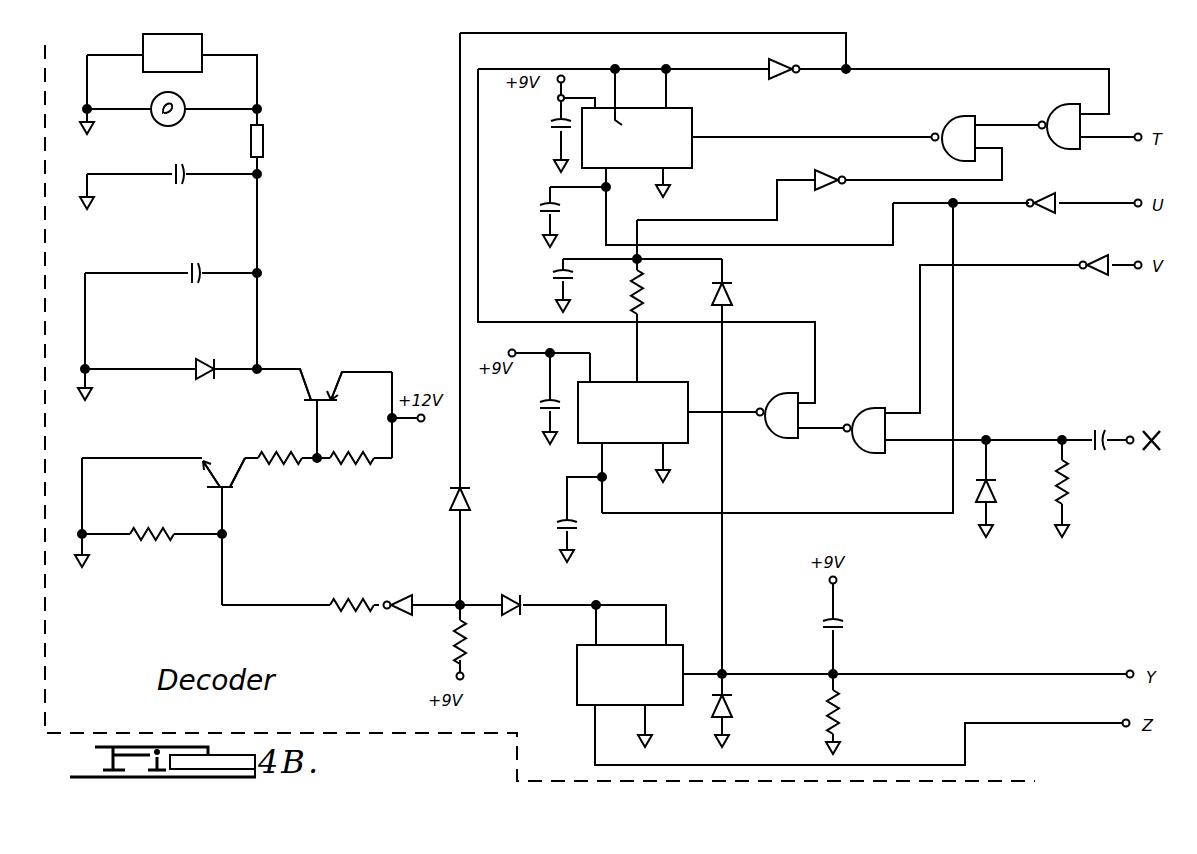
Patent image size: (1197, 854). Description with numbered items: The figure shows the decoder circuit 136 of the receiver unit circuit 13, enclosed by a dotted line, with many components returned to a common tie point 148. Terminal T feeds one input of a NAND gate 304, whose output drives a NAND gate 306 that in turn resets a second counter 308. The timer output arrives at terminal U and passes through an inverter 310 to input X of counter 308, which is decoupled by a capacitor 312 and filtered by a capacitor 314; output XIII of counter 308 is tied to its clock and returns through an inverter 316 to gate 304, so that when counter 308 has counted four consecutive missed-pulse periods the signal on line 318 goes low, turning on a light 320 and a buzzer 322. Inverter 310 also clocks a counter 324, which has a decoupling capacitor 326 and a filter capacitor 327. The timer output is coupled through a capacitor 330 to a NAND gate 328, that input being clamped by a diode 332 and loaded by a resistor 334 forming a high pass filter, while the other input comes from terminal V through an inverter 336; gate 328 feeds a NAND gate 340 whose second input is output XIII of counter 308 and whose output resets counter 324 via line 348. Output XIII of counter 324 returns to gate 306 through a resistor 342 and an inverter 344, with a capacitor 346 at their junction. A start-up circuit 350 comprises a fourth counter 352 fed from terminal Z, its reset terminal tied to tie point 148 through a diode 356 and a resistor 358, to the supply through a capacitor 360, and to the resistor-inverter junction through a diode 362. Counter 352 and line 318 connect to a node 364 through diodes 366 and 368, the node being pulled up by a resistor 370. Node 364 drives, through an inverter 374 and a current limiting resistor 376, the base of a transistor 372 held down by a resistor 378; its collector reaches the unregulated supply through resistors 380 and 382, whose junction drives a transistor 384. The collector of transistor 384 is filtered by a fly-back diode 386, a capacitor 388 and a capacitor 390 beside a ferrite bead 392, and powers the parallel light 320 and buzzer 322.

The receiver unit circuit 13 is at (1147, 82).
The decoder circuit 136 is at (152, 647).
The tie point 148 is at (94, 128).
The NAND gate 304 is at (1052, 108).
The NAND gate 306 is at (948, 118).
The second counter 308 is at (692, 120).
The inverter 310 is at (1050, 197).
The decoupling capacitor 312 is at (556, 126).
The filter capacitor 314 is at (546, 212).
The inverter 316 is at (780, 78).
The line 318 is at (698, 36).
The light 320 is at (182, 98).
The buzzer 322 is at (202, 58).
The counter 324 is at (662, 380).
The decoupling capacitor 326 is at (545, 408).
The filter capacitor 327 is at (560, 527).
The NAND gate 328 is at (865, 452).
The capacitor 330 is at (1100, 428).
The clamping diode 332 is at (998, 488).
The resistor 334 is at (1072, 494).
The inverter 336 is at (1097, 278).
The NAND gate 340 is at (778, 437).
The resistor 342 is at (646, 310).
The inverter 344 is at (824, 190).
The capacitor 346 is at (558, 280).
The line 348 is at (1006, 438).
The start-up circuit 350 is at (873, 657).
The fourth counter 352 is at (577, 677).
The diode 356 is at (732, 705).
The resistor 358 is at (840, 716).
The capacitor 360 is at (825, 626).
The diode 362 is at (735, 300).
The node 364 is at (490, 580).
The diode 366 is at (516, 613).
The diode 368 is at (450, 495).
The resistor 370 is at (450, 643).
The transistor 372 is at (233, 490).
The inverter 374 is at (414, 597).
The current limiting resistor 376 is at (345, 600).
The hold down resistor 378 is at (158, 530).
The current limiting resistor 380 is at (270, 456).
The hold down resistor 382 is at (360, 470).
The transistor 384 is at (306, 404).
The fly-back diode 386 is at (198, 360).
The filter capacitor 388 is at (190, 283).
The filter capacitor 390 is at (180, 163).
The ferrite bead 392 is at (265, 136).